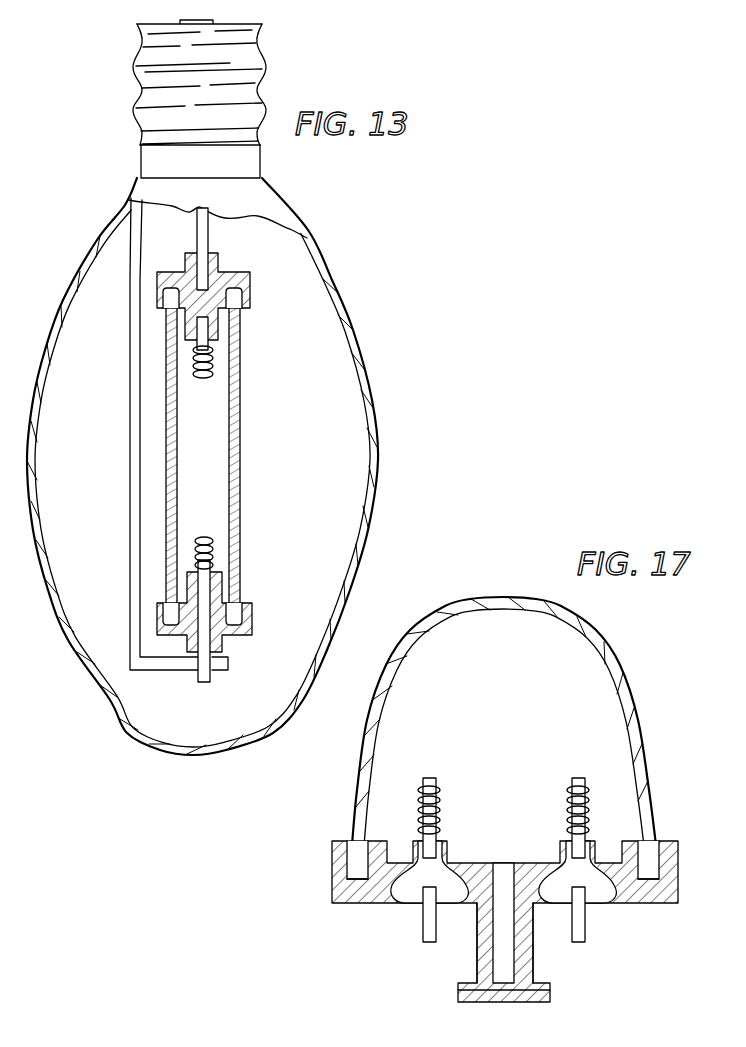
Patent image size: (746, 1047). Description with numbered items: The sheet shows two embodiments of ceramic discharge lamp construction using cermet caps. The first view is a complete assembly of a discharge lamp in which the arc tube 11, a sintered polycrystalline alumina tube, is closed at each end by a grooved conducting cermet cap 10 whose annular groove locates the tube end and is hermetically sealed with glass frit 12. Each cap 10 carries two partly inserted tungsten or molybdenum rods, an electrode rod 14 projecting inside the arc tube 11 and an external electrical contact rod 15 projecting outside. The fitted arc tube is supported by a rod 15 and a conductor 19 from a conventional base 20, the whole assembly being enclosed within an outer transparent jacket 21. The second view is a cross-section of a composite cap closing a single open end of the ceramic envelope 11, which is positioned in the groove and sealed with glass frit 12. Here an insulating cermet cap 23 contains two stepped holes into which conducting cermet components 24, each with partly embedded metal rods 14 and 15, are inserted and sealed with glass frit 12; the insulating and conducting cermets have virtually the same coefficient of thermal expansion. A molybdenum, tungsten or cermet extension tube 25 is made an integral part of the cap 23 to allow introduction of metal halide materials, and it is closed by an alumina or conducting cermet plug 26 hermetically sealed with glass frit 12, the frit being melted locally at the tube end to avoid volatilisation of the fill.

In FIG. 13, the grooved conducting cermet cap 10 is at (250, 279).
In FIG. 13, the arc tube 11 is at (241, 430).
In FIG. 17, the arc tube 11 is at (620, 691).
In FIG. 17, the glass frit 12 is at (402, 903).
In FIG. 13, the electrode rod 14 is at (203, 384).
In FIG. 17, the electrode rod 14 is at (566, 790).
In FIG. 13, the external electrical contact rod 15 is at (209, 222).
In FIG. 17, the external electrical contact rod 15 is at (430, 942).
In FIG. 13, the conductor 19 is at (130, 475).
In FIG. 13, the base 20 is at (140, 76).
In FIG. 13, the outer transparent jacket 21 is at (378, 412).
In FIG. 17, the insulating cermet cap 23 is at (680, 873).
In FIG. 17, the conducting cermet component 24 is at (445, 878).
In FIG. 17, the extension tube 25 is at (531, 947).
In FIG. 17, the plug 26 is at (502, 990).